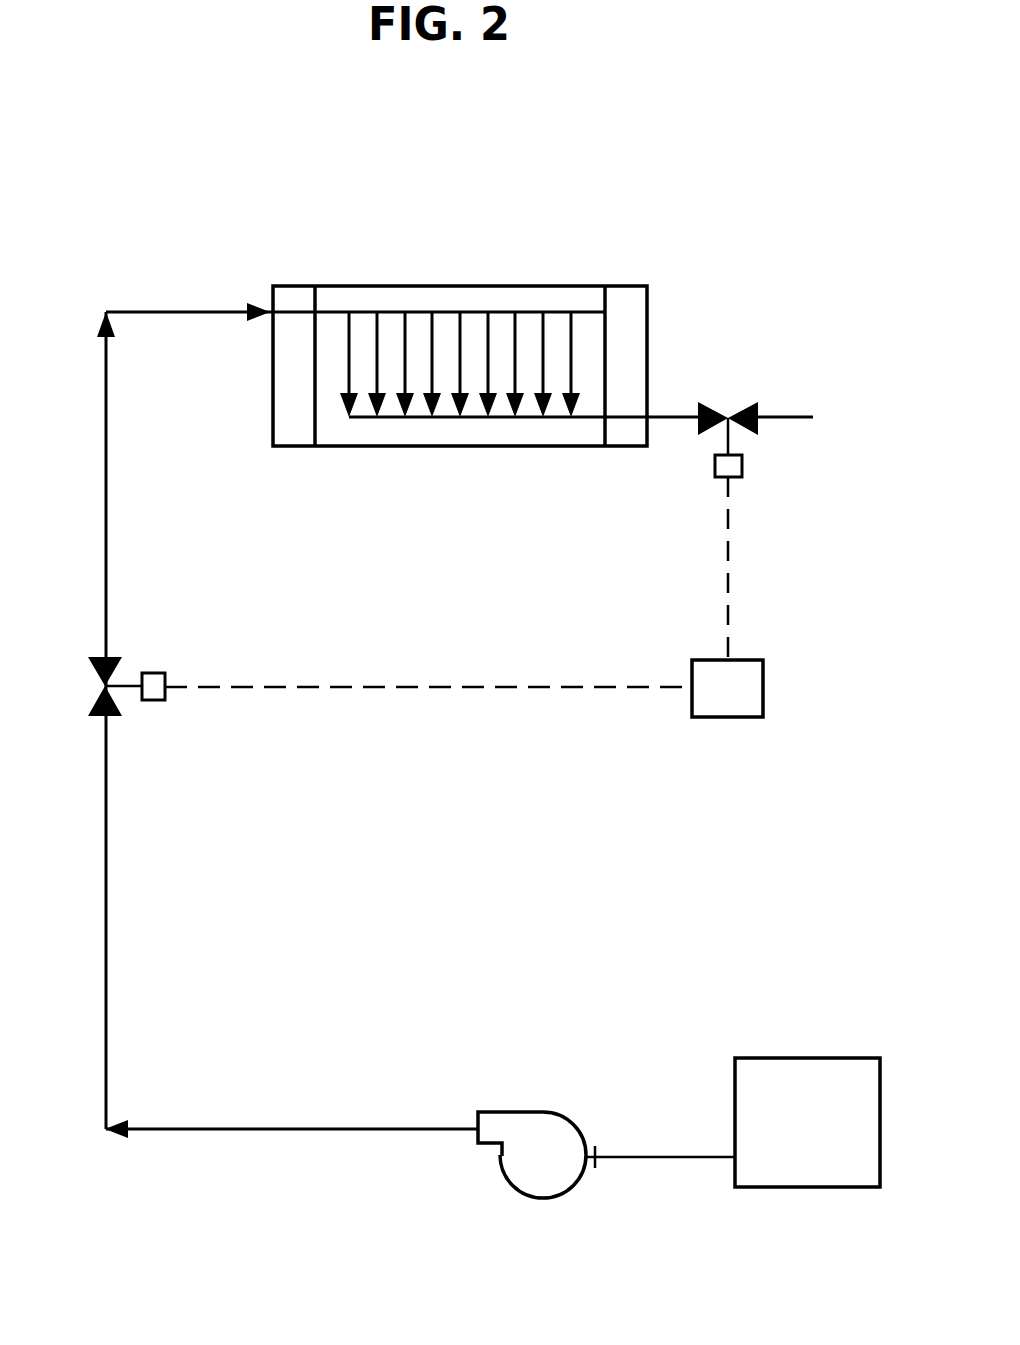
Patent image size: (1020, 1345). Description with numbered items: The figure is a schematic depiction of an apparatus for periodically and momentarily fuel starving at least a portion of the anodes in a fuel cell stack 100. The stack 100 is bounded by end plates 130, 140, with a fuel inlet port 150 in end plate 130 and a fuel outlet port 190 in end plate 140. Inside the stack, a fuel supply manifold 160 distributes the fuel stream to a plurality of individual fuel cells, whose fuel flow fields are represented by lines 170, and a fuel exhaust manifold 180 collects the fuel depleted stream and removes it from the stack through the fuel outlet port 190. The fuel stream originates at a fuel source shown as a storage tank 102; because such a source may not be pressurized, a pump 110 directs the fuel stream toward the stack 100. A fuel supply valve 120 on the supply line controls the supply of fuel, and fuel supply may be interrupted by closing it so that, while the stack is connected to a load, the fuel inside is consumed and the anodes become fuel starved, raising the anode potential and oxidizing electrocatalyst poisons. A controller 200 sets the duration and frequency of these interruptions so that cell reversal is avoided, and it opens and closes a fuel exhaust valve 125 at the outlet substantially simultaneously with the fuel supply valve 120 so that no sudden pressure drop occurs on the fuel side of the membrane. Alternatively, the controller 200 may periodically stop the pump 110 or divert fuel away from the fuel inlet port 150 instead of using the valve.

The fuel cell stack 100 is at (286, 159).
The storage tank 102 is at (760, 1075).
The pump 110 is at (537, 1111).
The fuel supply valve 120 is at (103, 685).
The fuel exhaust valve 125 is at (729, 416).
The end plate 130 is at (299, 293).
The end plate 140 is at (625, 310).
The fuel inlet port 150 is at (282, 312).
The fuel supply manifold 160 is at (390, 313).
The fuel flow fields 170 is at (433, 357).
The fuel exhaust manifold 180 is at (470, 417).
The fuel outlet port 190 is at (620, 417).
The controller 200 is at (744, 670).